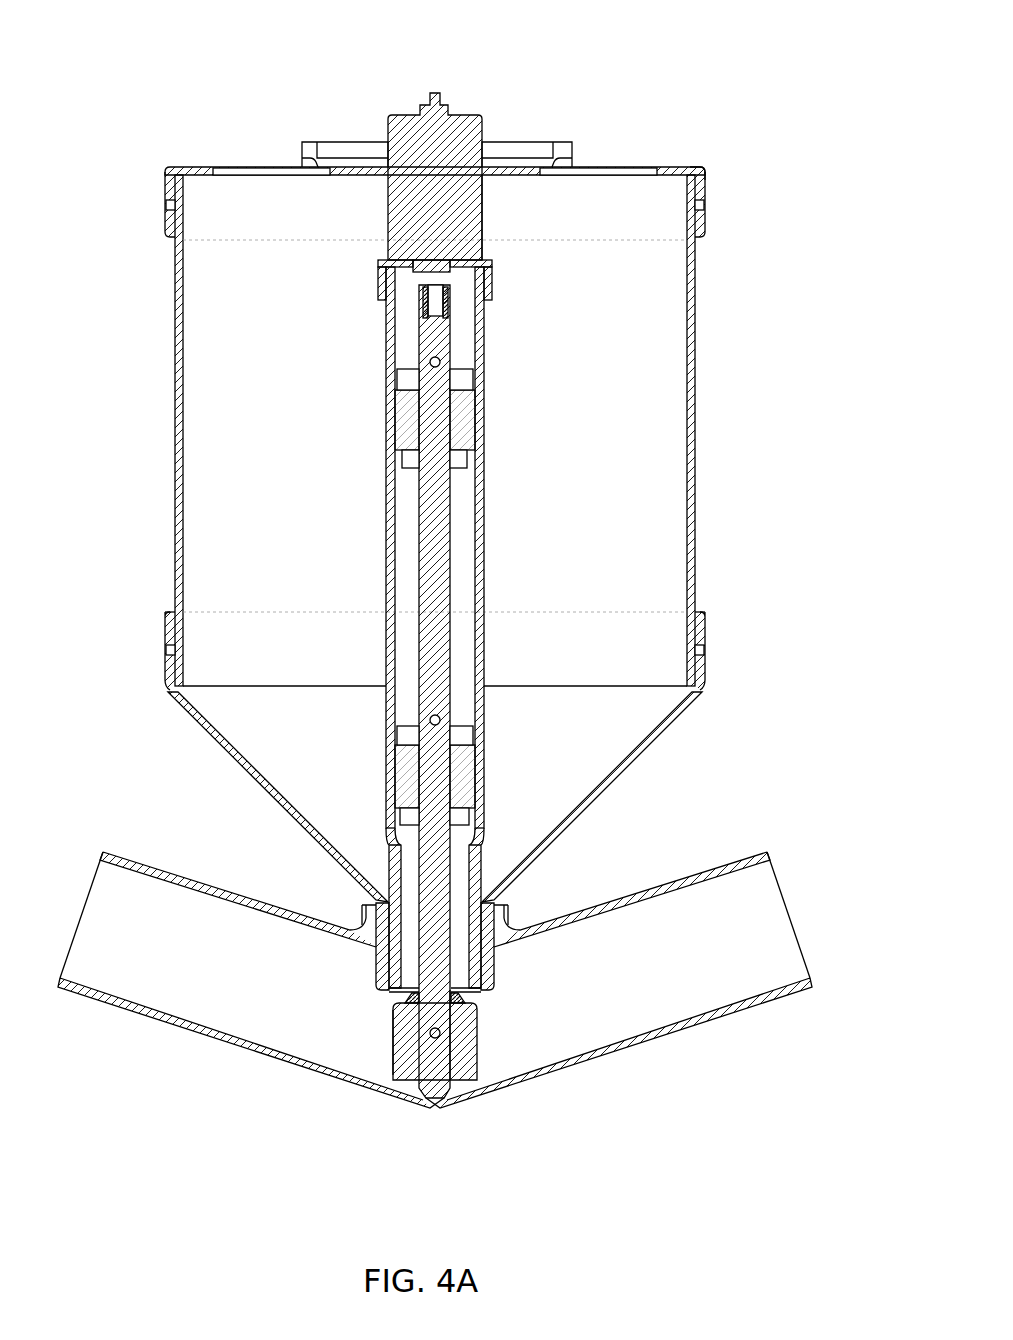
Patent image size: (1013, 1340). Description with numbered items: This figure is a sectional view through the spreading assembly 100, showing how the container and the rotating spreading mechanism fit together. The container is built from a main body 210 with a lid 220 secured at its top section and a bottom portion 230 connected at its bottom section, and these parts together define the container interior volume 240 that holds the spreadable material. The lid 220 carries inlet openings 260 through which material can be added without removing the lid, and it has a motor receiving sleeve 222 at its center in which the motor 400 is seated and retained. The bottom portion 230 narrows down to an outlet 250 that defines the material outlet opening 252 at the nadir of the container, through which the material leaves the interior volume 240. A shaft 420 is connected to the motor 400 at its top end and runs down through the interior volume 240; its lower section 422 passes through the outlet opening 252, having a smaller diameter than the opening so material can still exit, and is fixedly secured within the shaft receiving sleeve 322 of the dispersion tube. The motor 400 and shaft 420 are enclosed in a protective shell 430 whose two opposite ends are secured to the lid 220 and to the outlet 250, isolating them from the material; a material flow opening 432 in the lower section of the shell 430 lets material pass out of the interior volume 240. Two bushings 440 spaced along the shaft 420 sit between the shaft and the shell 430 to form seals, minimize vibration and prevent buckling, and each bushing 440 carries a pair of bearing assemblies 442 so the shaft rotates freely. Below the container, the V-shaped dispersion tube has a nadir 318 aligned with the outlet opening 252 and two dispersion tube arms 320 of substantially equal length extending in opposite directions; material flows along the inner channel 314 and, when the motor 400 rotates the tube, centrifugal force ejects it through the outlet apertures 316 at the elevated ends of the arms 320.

The spreading assembly 100 is at (65, 66).
The main body 210 is at (700, 366).
The lid 220 is at (697, 167).
The motor receiving sleeve 222 is at (482, 248).
The bottom portion 230 is at (680, 718).
The container interior volume 240 is at (225, 308).
The outlet 250 is at (497, 930).
The material outlet opening 252 is at (405, 965).
The inlet openings 260 is at (240, 160).
The inner channel 314 is at (735, 948).
The outlet aperture 316 is at (800, 885).
The nadir 318 is at (432, 1090).
The dispersion tube arms 320 is at (155, 1010).
The shaft receiving sleeve 322 is at (404, 1025).
The motor 400 is at (464, 124).
The shaft 420 is at (440, 566).
The lower section of the shaft 422 is at (440, 975).
The protective shell 430 is at (388, 598).
The material flow opening 432 is at (377, 860).
The bushings 440 is at (462, 415).
The bearing assemblies 442 is at (405, 378).